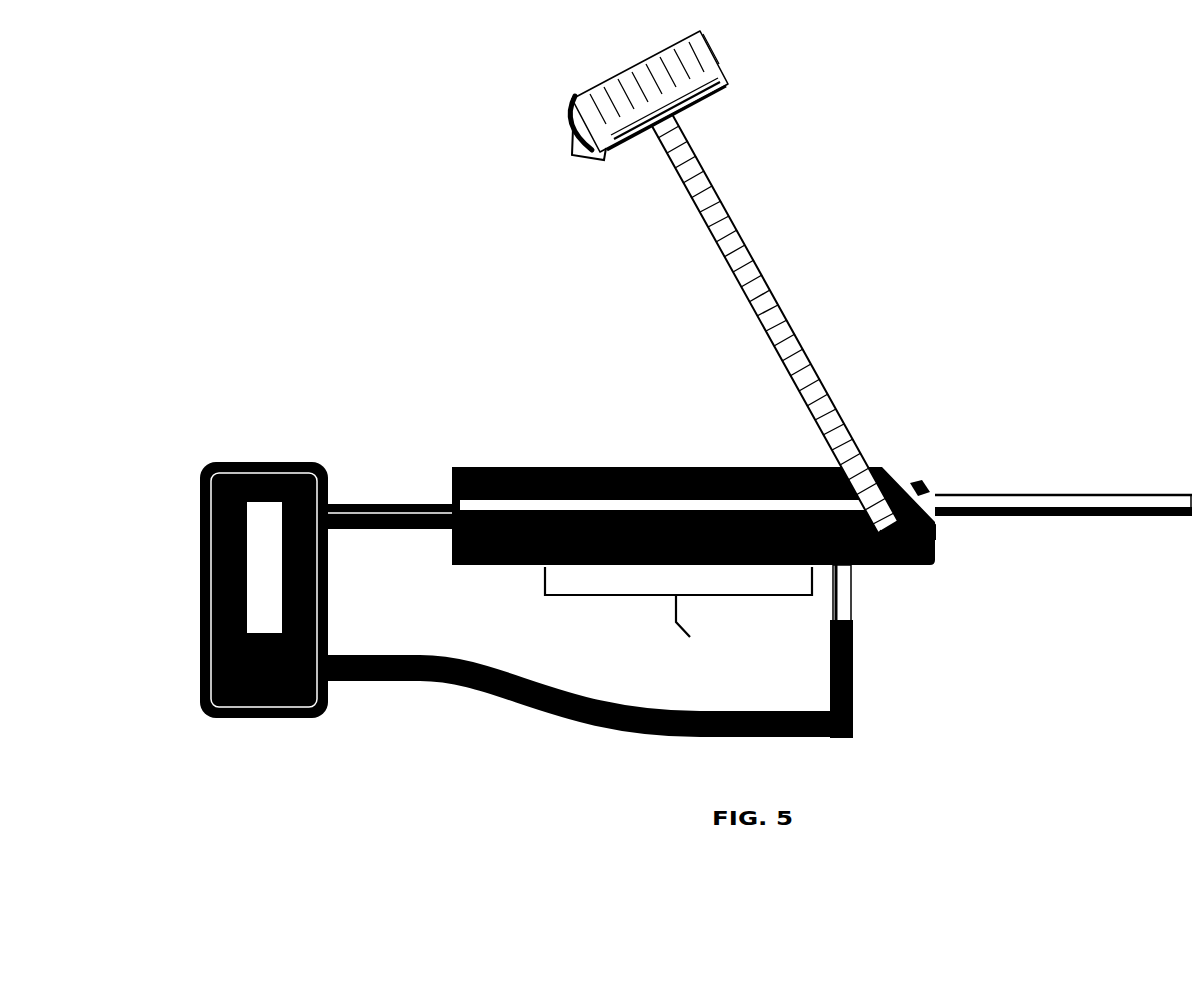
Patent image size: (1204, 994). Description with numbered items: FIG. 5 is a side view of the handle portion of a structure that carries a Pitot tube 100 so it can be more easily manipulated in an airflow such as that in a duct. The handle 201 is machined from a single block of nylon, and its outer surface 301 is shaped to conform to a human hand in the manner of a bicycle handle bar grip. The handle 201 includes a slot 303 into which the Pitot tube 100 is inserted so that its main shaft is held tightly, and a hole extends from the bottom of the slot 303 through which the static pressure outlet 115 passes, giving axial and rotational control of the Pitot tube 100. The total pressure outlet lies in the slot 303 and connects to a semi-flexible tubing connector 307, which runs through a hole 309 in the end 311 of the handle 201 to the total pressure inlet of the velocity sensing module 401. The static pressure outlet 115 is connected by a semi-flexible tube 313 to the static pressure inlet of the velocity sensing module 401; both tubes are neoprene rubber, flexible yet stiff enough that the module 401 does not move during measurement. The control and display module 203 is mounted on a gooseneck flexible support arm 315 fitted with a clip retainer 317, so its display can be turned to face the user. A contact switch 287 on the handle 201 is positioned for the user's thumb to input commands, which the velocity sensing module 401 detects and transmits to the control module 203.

The Pitot tube 100 is at (1075, 500).
The static pressure outlet 115 is at (853, 622).
The handle 201 is at (478, 565).
The control and display module 203 is at (655, 92).
The contact switch 287 is at (924, 484).
The outer surface 301 is at (678, 612).
The slot 303 is at (822, 470).
The semi-flexible tubing connector 307 is at (400, 503).
The hole 309 is at (452, 480).
The end of handle 311 is at (515, 470).
The semi-flexible tube 313 is at (853, 693).
The flexible support arm 315 is at (754, 278).
The clip retainer 317 is at (722, 90).
The velocity sensing module 401 is at (281, 482).